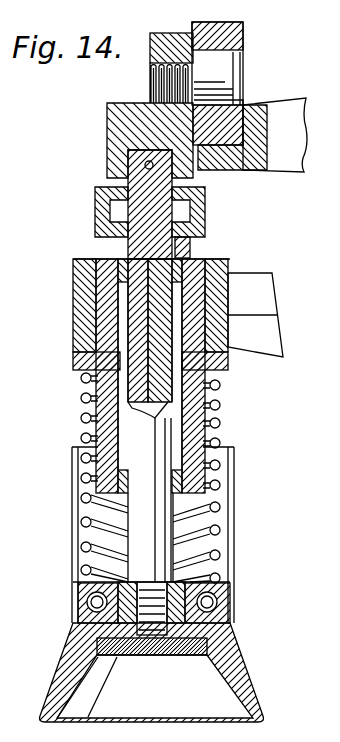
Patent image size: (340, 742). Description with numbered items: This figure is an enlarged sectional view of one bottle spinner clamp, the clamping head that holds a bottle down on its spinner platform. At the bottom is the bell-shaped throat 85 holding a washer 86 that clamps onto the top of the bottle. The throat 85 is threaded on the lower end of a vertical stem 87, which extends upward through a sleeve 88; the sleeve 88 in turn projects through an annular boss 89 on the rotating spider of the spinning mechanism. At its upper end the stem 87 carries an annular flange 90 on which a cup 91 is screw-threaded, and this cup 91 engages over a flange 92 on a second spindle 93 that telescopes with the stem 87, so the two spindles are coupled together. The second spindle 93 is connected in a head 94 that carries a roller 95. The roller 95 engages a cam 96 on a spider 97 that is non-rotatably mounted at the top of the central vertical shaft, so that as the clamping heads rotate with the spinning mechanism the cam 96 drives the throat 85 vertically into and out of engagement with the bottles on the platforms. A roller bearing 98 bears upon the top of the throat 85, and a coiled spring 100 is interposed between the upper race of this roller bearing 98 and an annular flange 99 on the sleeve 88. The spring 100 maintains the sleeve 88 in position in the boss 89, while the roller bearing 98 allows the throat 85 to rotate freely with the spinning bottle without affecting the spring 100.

The throat 85 is at (237, 677).
The washer 86 is at (192, 656).
The stem 87 is at (165, 548).
The sleeve 88 is at (105, 387).
The annular boss 89 is at (80, 300).
The annular flange 90 is at (178, 242).
The cup 91 is at (197, 212).
The flange 92 is at (118, 215).
The second spindle 93 is at (140, 242).
The head 94 is at (118, 126).
The roller 95 is at (243, 37).
The cam 96 is at (236, 160).
The spider 97 is at (290, 166).
The roller bearing 98 is at (227, 613).
The annular flange 99 is at (227, 365).
The coiled spring 100 is at (220, 423).